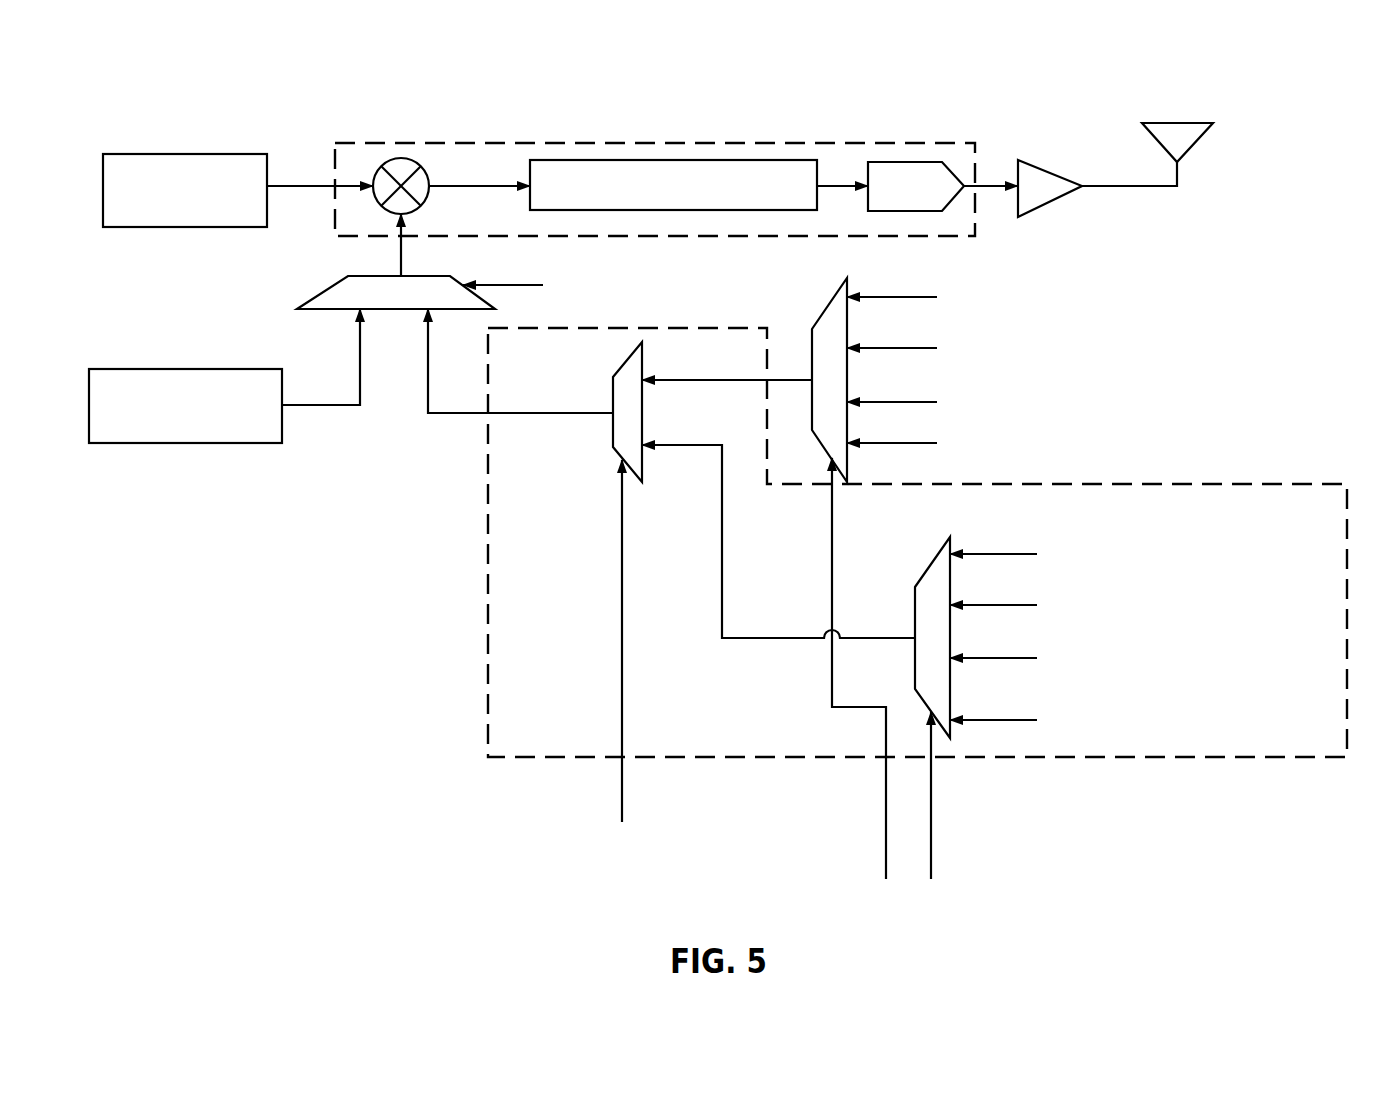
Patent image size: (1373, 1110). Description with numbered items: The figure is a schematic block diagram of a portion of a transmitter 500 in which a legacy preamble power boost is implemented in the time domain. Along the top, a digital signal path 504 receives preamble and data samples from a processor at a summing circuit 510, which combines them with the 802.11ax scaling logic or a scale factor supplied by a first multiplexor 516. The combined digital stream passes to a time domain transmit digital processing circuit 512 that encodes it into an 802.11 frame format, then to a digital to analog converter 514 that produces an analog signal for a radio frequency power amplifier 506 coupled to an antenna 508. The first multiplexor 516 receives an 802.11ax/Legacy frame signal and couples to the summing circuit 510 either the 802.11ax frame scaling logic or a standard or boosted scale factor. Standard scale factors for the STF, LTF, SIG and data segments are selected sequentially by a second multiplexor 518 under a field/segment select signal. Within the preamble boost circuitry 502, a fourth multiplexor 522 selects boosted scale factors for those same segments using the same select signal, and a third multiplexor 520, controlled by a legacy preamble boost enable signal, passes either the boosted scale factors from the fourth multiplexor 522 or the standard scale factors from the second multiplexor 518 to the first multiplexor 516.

The transmitter 500 is at (125, 76).
The preamble boost circuitry 502 is at (552, 734).
The digital signal path 504 is at (486, 142).
The radio frequency (RF) power amplifier 506 is at (1060, 149).
The antenna 508 is at (1179, 122).
The summing circuit 510 is at (401, 158).
The time domain transmit digital processing circuit 512 is at (677, 160).
The digital to analog converter 514 is at (908, 162).
The first multiplexor 516 is at (319, 295).
The second multiplexor 518 is at (828, 303).
The third multiplexor 520 is at (642, 407).
The fourth multiplexor 522 is at (931, 562).